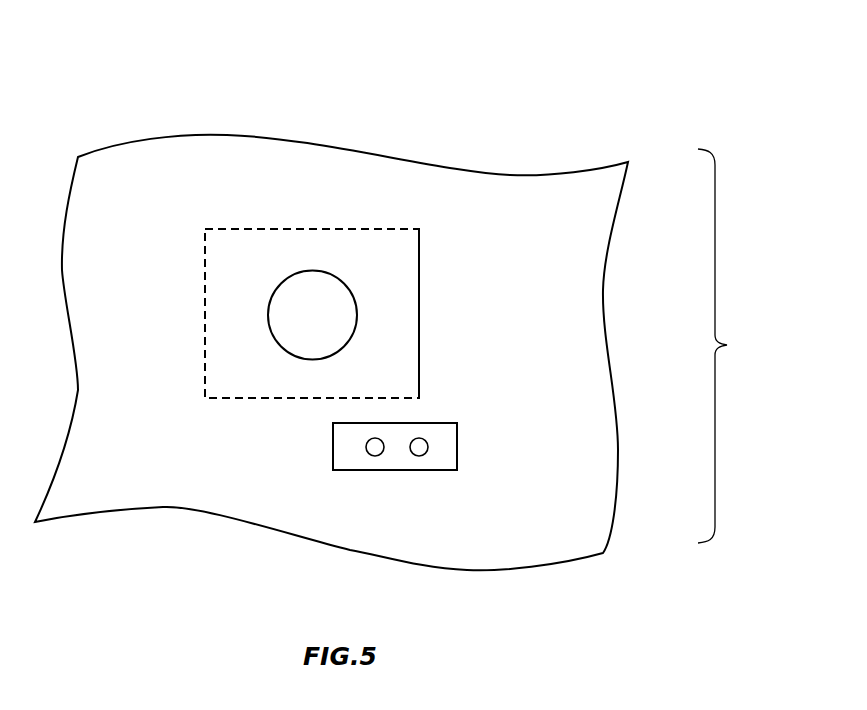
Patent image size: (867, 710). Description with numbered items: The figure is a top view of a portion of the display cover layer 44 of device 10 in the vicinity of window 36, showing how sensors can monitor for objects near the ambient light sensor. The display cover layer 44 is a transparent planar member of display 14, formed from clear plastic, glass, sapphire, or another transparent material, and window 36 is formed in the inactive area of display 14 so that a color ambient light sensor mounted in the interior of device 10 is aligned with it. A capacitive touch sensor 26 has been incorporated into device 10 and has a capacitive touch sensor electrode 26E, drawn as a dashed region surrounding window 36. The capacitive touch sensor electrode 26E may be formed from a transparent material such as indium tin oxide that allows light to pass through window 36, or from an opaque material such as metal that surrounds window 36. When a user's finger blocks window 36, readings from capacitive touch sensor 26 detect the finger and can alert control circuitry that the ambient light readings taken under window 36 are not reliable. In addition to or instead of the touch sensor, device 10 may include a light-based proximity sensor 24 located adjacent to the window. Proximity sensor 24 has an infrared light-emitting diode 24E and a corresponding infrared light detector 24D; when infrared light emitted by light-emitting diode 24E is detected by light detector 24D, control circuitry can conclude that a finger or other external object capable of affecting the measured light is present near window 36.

The device 10 is at (727, 346).
The display 14 is at (484, 100).
The light-based proximity sensor 24 is at (458, 438).
The infrared light detector 24D is at (418, 457).
The infrared light-emitting diode 24E is at (374, 457).
The capacitive touch sensor 26 is at (372, 219).
The capacitive touch sensor electrode 26E is at (420, 250).
The window 36 is at (357, 310).
The display cover layer 44 is at (510, 187).